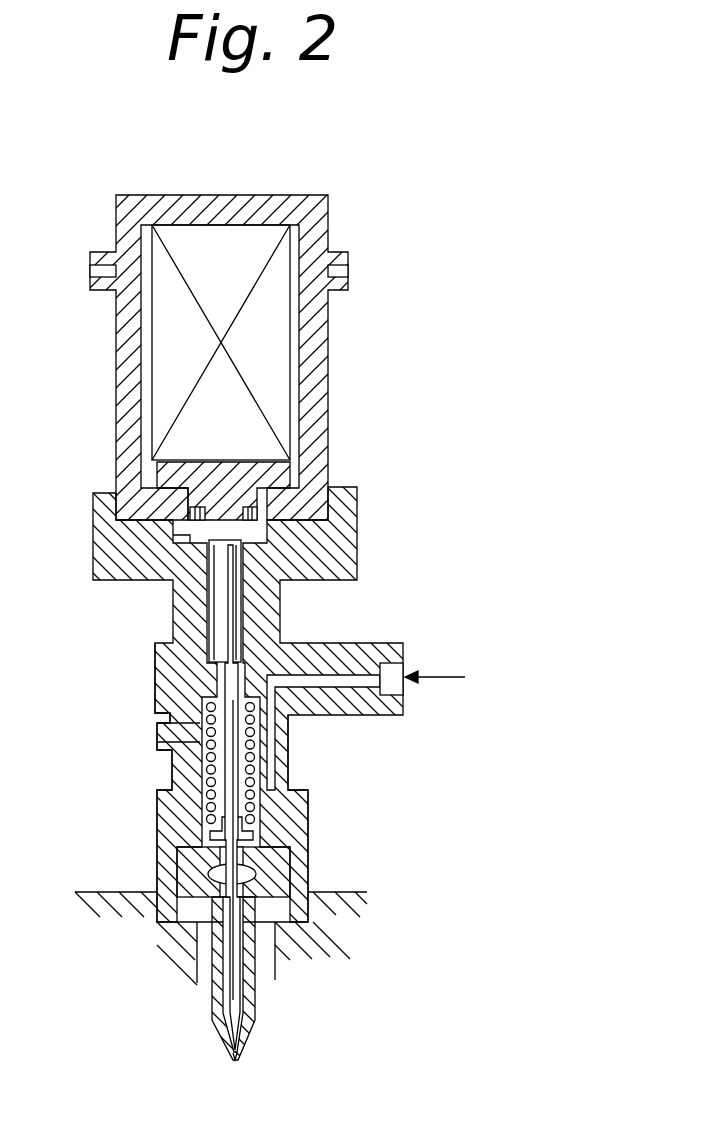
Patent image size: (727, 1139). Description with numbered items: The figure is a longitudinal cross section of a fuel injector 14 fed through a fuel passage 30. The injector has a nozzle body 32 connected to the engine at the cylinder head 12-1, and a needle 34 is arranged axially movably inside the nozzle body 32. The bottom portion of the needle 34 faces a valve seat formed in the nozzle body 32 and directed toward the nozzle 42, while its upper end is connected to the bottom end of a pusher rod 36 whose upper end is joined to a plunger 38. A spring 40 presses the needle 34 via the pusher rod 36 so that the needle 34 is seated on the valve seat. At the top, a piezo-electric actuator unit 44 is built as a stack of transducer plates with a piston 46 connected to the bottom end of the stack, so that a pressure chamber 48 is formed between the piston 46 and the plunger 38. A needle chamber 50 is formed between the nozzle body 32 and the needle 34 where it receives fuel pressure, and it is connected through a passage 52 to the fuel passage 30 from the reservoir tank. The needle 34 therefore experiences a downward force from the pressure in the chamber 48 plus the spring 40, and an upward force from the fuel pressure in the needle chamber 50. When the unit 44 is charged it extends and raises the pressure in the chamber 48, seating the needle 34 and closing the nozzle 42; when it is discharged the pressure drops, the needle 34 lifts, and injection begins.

The fuel injector 14 is at (338, 201).
The piezo-electric actuator unit 44 is at (278, 363).
The piston 46 is at (162, 473).
The pressure chamber 48 is at (187, 553).
The plunger 38 is at (218, 609).
The passage 52 is at (350, 680).
The fuel passage 30 is at (498, 677).
The pusher rod 36 is at (226, 775).
The spring 40 is at (213, 800).
The needle chamber 50 is at (207, 868).
The needle 34 is at (229, 958).
The nozzle body 32 is at (258, 977).
The nozzle 42 is at (235, 1062).
The cylinder head 12-1 is at (332, 893).